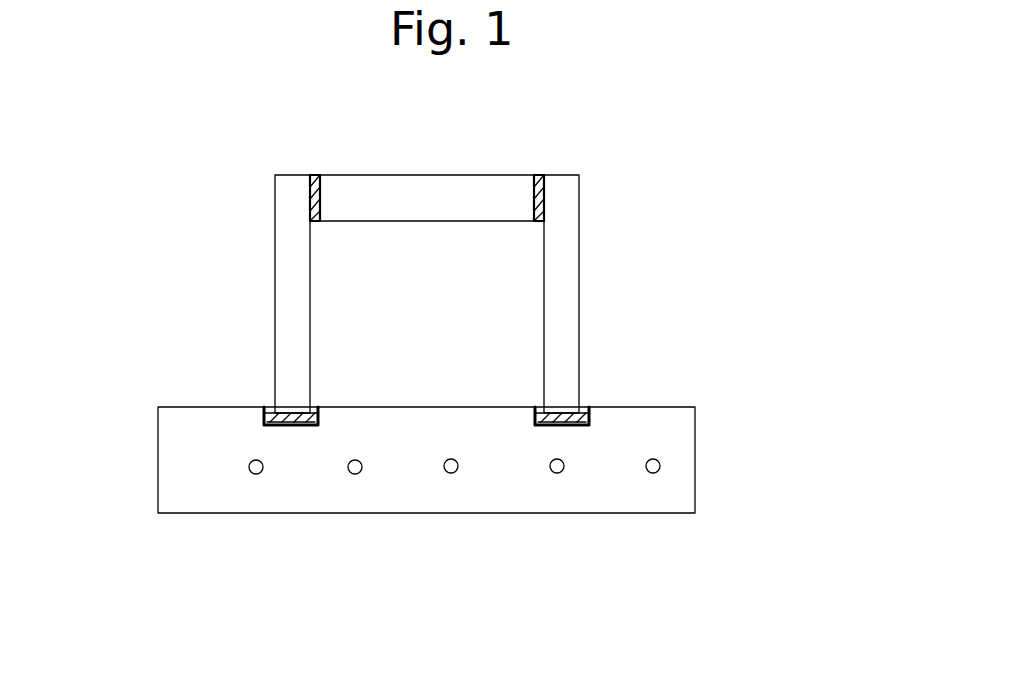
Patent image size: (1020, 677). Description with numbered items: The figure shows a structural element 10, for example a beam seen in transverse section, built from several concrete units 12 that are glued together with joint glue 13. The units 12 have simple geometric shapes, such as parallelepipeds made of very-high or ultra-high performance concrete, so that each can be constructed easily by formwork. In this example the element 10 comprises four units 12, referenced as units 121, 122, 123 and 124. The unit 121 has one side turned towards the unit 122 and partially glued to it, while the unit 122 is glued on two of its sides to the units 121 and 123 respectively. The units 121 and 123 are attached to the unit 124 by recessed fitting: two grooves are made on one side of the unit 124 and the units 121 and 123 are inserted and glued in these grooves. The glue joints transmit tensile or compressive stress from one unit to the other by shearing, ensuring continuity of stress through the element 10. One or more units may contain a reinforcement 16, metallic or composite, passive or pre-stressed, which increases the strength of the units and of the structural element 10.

The structural element 10 is at (711, 296).
The units 12 is at (644, 129).
The joint glue 13 is at (312, 176).
The reinforcement 16 is at (350, 470).
The unit 121 is at (558, 205).
The unit 122 is at (430, 185).
The unit 123 is at (292, 280).
The unit 124 is at (190, 472).